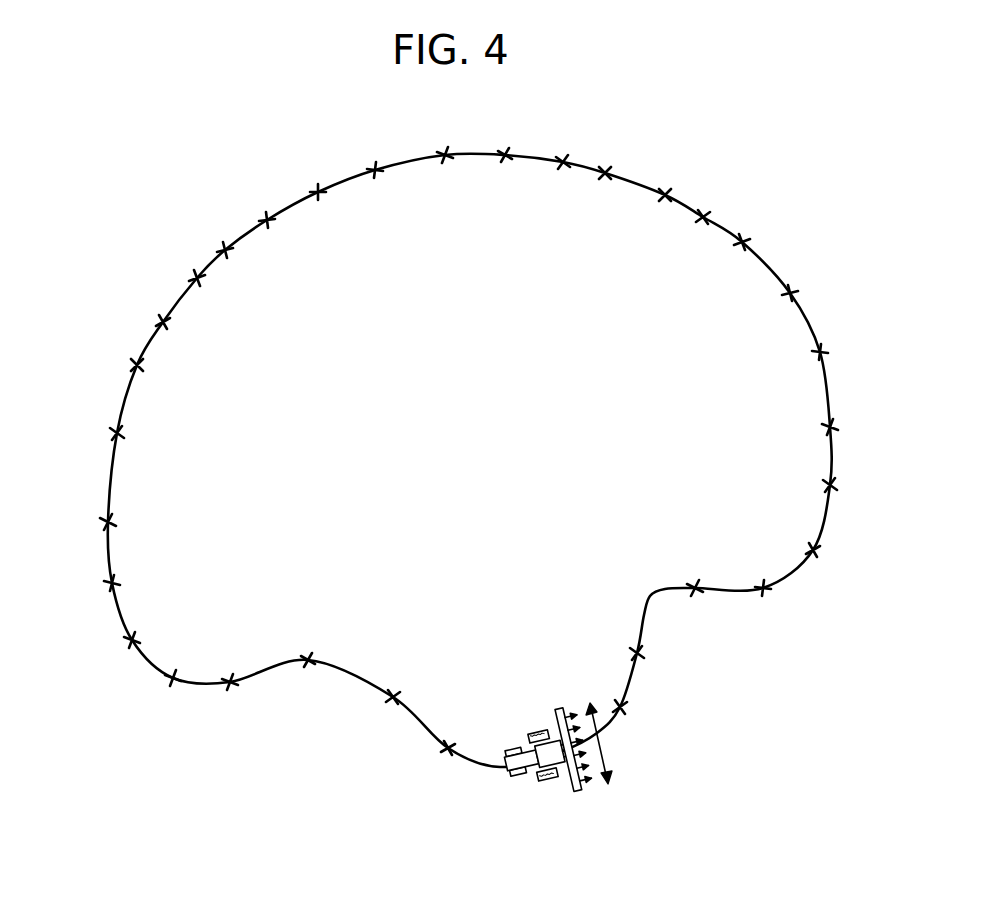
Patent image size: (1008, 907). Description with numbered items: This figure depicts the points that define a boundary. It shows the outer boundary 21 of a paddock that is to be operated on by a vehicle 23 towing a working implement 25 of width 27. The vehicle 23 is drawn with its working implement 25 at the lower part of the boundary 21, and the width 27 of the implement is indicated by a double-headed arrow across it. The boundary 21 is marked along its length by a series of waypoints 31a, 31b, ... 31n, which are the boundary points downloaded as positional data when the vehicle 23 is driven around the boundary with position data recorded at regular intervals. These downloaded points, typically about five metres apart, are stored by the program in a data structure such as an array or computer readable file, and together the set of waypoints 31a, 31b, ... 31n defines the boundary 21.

The outer boundary 21 is at (368, 674).
The vehicle 23 is at (526, 789).
The working implement 25 is at (588, 784).
The width 27 is at (593, 738).
The waypoint 31a is at (168, 687).
The waypoint 31b is at (126, 647).
The waypoint 31n is at (230, 690).